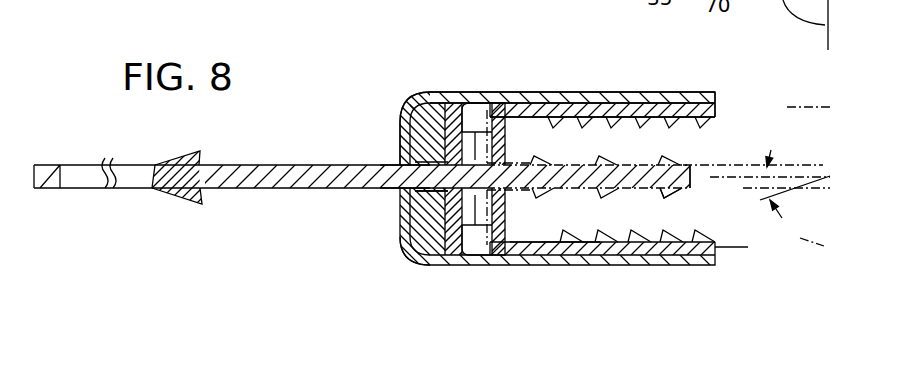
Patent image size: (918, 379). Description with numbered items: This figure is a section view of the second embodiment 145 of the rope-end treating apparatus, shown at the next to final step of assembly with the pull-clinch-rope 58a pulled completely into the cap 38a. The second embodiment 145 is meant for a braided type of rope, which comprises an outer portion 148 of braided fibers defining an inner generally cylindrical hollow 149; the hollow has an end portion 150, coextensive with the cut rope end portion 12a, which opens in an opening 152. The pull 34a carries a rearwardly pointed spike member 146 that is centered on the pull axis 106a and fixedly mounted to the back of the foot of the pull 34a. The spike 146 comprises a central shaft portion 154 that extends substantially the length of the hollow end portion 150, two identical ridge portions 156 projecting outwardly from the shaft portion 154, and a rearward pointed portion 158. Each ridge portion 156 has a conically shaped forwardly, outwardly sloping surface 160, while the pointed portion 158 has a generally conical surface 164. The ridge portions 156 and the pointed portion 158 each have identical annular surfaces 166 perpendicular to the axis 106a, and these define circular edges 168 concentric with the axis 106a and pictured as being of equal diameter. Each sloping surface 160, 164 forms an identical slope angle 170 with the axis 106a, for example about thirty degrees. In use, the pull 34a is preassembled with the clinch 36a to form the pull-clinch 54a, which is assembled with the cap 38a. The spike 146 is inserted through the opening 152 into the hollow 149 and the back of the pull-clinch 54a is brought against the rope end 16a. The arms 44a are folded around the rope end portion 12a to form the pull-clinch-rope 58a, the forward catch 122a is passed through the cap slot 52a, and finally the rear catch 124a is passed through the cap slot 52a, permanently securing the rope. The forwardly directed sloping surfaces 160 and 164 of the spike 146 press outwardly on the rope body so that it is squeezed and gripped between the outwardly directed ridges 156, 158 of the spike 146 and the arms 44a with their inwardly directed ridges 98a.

The rope end portion 12a is at (543, 104).
The rope end 16a is at (428, 262).
The pull 34a is at (258, 158).
The clinch 36a is at (500, 102).
The cap 38a is at (470, 128).
The arms 44a is at (656, 104).
The cap slot 52a is at (412, 193).
The pull-clinch 54a is at (445, 133).
The pull-clinch-rope 58a is at (703, 90).
The inwardly directed ridges 98a is at (522, 117).
The pull axis 106a is at (717, 112).
The forward catch 122a is at (178, 163).
The rear catch 124a is at (397, 165).
The second embodiment 145 is at (386, 78).
The spike member 146 is at (587, 156).
The outer portion 148 is at (806, 163).
The cylindrical hollow 149 is at (745, 193).
The hollow end portion 150 is at (538, 120).
The opening 152 is at (418, 258).
The central shaft portion 154 is at (522, 196).
The ridge portions 156 is at (565, 243).
The rearward pointed portion 158 is at (676, 200).
The forwardly, outwardly sloping surface 160 is at (560, 243).
The conical surface 164 is at (692, 196).
The annular surfaces 166 is at (533, 200).
The circular edges 168 is at (547, 243).
The slope angle 170 is at (800, 237).